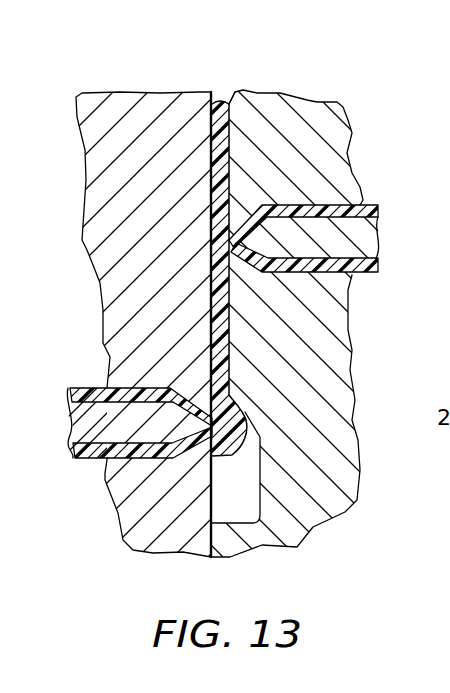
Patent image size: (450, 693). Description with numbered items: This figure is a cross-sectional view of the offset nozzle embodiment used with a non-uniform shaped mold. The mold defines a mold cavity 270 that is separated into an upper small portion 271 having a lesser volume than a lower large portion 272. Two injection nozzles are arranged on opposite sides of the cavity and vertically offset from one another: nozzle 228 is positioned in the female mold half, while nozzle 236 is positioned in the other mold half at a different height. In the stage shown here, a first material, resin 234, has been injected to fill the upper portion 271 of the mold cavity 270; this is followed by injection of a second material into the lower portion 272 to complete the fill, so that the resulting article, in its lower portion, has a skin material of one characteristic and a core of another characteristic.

The nozzle 228 is at (336, 207).
The resin 234 is at (366, 206).
The nozzle 236 is at (82, 412).
The mold cavity 270 is at (210, 483).
The upper small portion 271 is at (236, 90).
The lower large portion 272 is at (243, 512).